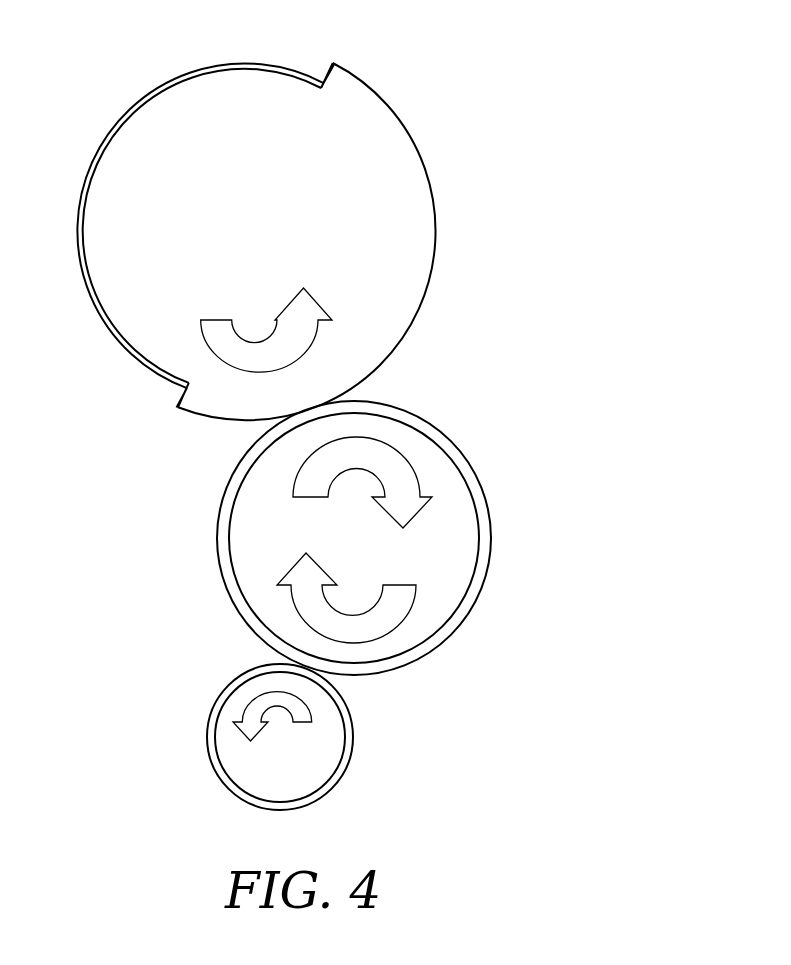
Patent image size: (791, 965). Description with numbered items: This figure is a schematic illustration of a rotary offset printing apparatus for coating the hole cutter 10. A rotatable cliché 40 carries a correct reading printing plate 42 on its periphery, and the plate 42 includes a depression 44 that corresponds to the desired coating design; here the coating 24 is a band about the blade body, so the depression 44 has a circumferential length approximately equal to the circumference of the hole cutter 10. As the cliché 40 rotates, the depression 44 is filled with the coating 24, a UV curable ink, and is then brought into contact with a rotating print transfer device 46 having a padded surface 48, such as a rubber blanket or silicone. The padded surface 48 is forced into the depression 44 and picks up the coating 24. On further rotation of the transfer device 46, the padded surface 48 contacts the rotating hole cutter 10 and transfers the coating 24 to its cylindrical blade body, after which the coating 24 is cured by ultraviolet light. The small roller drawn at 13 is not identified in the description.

The hole cutter 10 is at (334, 809).
The roller 13 is at (218, 765).
The coating 24 is at (106, 143).
The cliché 40 is at (330, 170).
The correct reading printing plate 42 is at (197, 73).
The depression 44 is at (163, 382).
The print transfer device 46 is at (467, 537).
The padded surface 48 is at (232, 486).